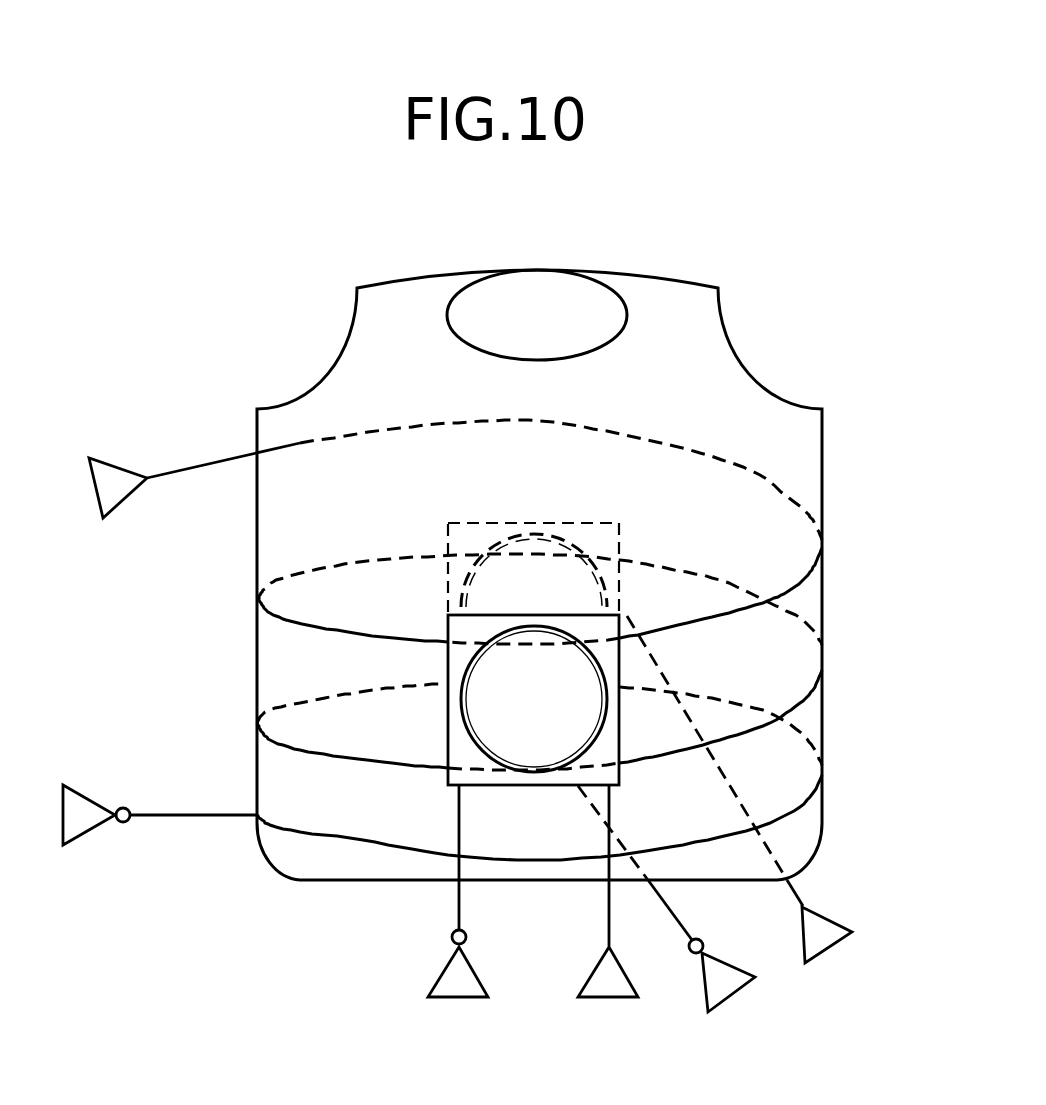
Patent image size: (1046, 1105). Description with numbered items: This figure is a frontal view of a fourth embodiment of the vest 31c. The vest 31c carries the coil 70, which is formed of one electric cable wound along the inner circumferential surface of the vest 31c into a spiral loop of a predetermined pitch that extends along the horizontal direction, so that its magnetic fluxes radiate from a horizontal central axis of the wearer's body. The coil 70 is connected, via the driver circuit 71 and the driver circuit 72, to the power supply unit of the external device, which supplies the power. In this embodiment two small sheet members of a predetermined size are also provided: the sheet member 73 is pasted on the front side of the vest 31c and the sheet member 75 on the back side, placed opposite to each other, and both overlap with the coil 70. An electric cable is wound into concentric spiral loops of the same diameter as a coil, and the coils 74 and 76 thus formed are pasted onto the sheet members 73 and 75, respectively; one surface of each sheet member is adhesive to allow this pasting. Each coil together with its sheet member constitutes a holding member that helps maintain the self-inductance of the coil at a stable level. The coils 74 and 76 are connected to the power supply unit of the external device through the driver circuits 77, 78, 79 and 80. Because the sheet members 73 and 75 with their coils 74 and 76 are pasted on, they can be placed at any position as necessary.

The vest 31c is at (678, 278).
The coil 70 is at (800, 592).
The driver circuit 71 is at (117, 482).
The driver circuit 72 is at (87, 808).
The sheet member 73 is at (448, 660).
The coil 74 is at (459, 697).
The sheet member 75 is at (620, 532).
The coil 76 is at (547, 540).
The driver circuit 77 is at (607, 989).
The driver circuit 78 is at (460, 989).
The driver circuit 79 is at (825, 938).
The driver circuit 80 is at (725, 985).